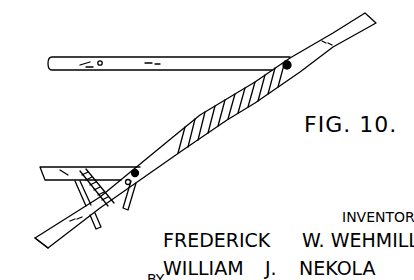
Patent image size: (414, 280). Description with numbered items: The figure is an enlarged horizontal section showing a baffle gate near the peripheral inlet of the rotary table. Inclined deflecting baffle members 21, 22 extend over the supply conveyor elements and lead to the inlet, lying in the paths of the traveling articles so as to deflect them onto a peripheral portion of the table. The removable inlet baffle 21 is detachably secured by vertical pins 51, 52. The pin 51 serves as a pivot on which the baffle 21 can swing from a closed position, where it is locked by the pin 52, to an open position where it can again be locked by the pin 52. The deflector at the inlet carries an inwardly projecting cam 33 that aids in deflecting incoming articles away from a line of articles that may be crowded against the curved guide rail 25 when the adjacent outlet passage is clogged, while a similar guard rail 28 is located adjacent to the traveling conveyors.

The inclined deflecting baffle member 21 is at (75, 72).
The inclined deflecting baffle member 22 is at (337, 33).
The curved guide rail 25 is at (31, 249).
The guard rail 28 is at (47, 167).
The inwardly projecting cam 33 is at (127, 205).
The vertical pin 51 is at (290, 69).
The vertical pin 52 is at (102, 60).